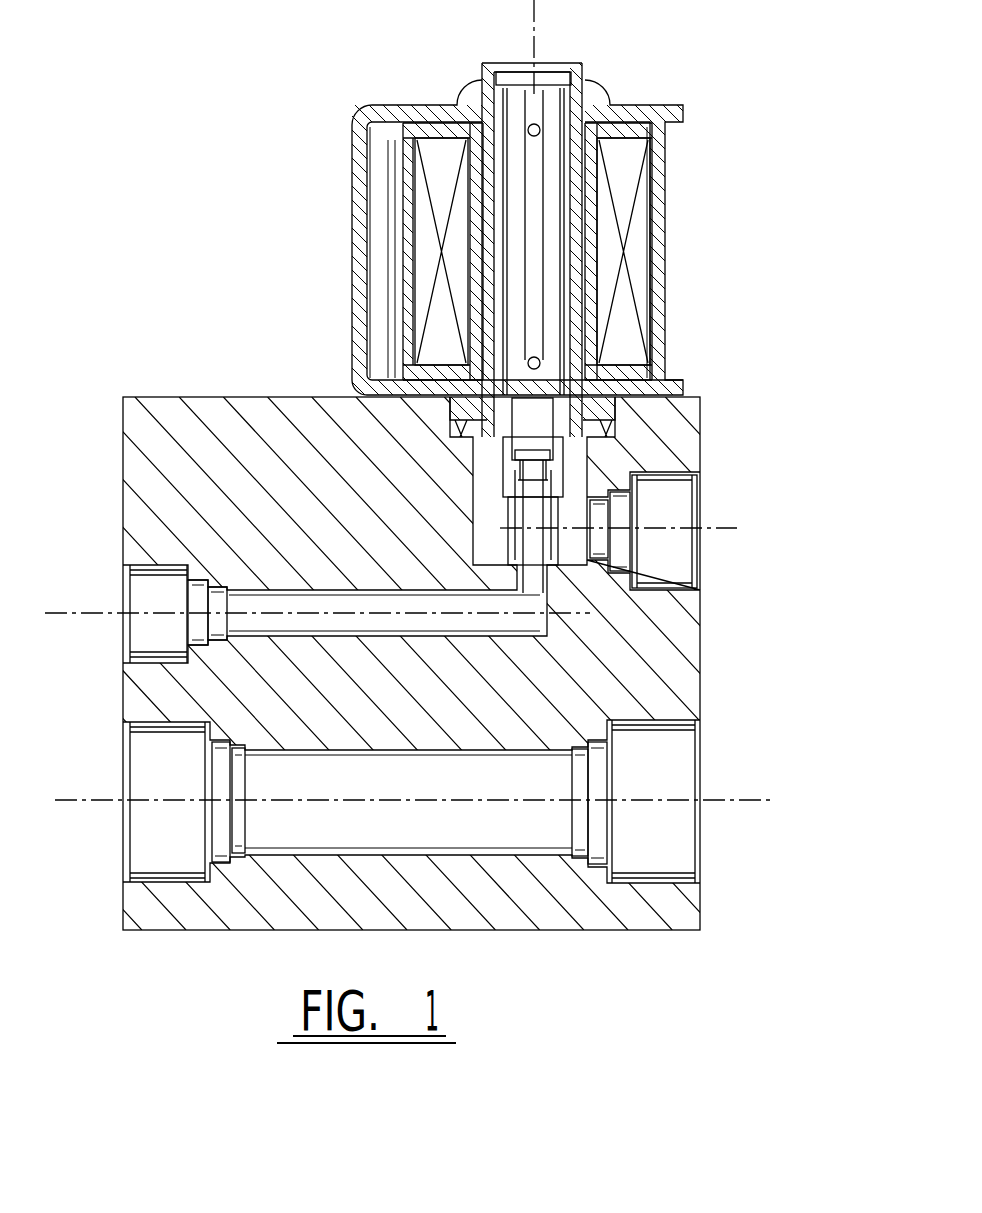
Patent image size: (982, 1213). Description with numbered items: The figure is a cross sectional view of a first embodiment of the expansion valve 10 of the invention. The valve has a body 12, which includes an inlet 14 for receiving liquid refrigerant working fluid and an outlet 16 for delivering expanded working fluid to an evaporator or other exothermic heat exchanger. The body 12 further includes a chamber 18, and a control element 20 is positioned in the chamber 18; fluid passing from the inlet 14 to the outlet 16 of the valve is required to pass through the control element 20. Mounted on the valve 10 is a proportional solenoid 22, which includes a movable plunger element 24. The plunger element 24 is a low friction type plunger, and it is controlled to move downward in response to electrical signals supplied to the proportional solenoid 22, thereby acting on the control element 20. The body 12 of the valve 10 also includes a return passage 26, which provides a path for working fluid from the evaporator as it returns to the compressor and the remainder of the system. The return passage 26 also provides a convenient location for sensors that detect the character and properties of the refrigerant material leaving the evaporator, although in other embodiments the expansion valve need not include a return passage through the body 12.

The expansion valve 10 is at (745, 314).
The body 12 is at (178, 433).
The inlet 14 is at (675, 510).
The outlet 16 is at (140, 622).
The chamber 18 is at (475, 538).
The control element 20 is at (503, 470).
The proportional solenoid 22 is at (665, 180).
The plunger element 24 is at (552, 140).
The return passage 26 is at (527, 752).